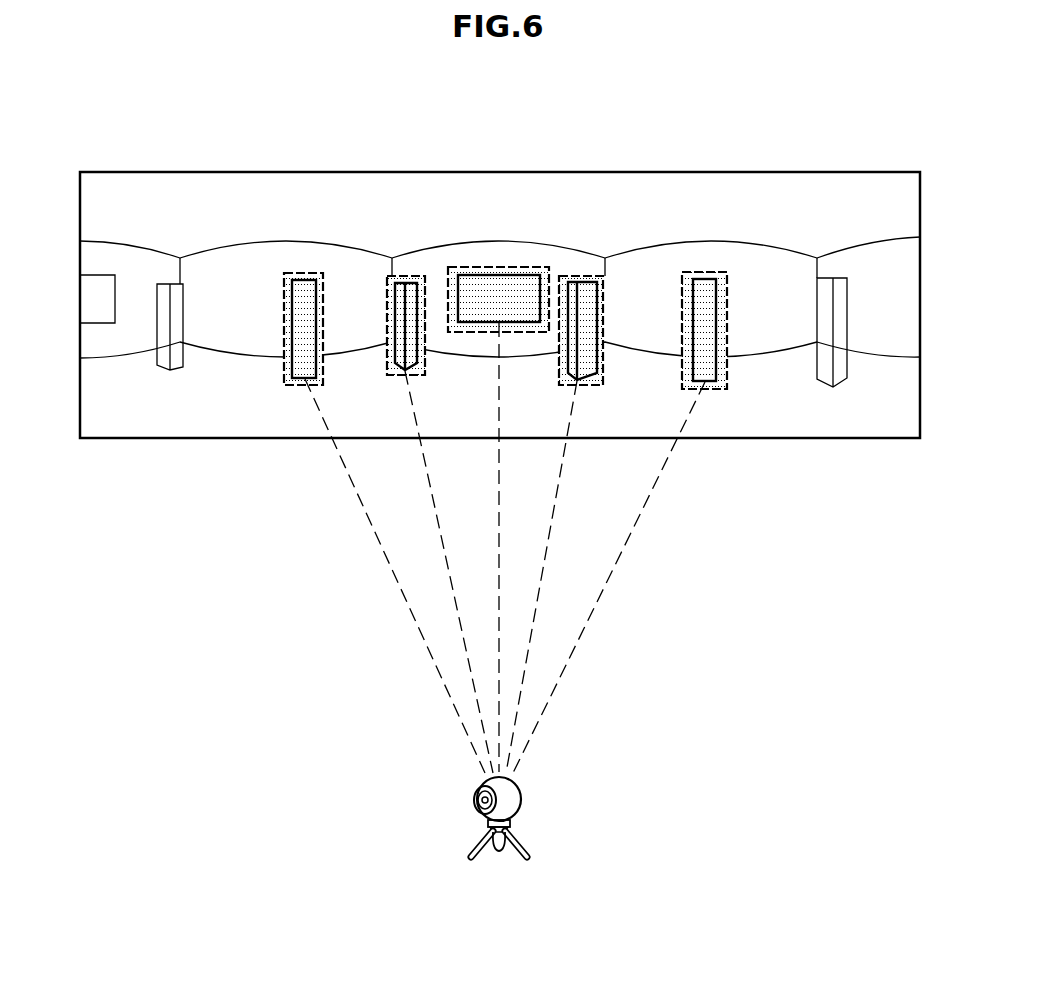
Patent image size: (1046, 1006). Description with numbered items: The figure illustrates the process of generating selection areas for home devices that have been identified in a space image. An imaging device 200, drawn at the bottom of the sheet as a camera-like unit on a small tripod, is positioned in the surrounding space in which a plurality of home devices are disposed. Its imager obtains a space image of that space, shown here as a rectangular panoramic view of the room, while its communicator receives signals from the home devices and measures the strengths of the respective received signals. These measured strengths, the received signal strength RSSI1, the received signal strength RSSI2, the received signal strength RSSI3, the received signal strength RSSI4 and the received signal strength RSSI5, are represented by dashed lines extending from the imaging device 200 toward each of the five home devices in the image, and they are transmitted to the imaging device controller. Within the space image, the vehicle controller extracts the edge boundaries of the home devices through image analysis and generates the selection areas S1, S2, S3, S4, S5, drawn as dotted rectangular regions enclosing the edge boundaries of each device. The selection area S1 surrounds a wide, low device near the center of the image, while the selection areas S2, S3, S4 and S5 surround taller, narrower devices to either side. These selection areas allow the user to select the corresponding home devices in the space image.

The selection area S1 is at (495, 267).
The selection area S2 is at (598, 275).
The selection area S3 is at (718, 272).
The selection area S4 is at (317, 273).
The selection area S5 is at (422, 275).
The imaging device 200 is at (521, 790).
The received signal strength RSSI1 is at (501, 547).
The received signal strength RSSI2 is at (543, 577).
The received signal strength RSSI3 is at (609, 577).
The received signal strength RSSI4 is at (395, 576).
The received signal strength RSSI5 is at (449, 572).